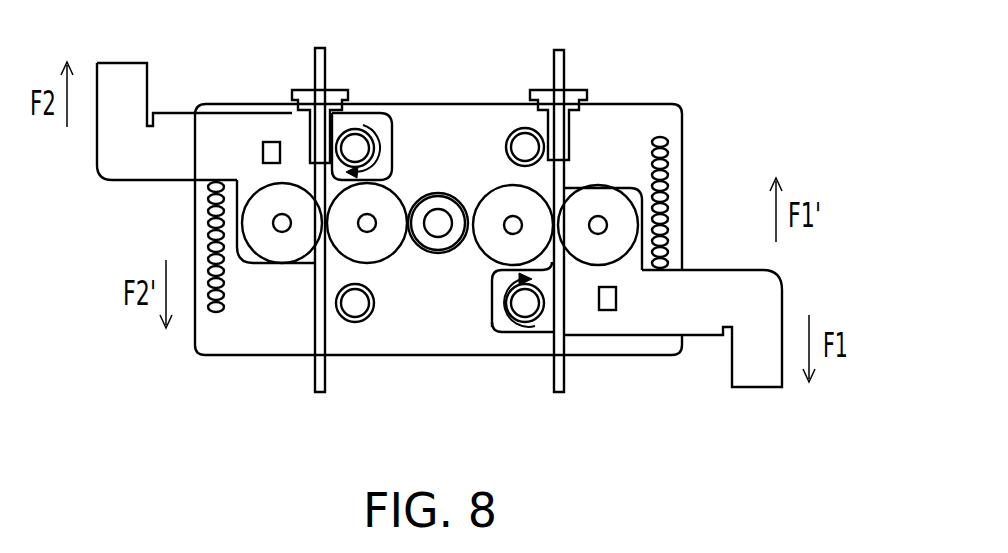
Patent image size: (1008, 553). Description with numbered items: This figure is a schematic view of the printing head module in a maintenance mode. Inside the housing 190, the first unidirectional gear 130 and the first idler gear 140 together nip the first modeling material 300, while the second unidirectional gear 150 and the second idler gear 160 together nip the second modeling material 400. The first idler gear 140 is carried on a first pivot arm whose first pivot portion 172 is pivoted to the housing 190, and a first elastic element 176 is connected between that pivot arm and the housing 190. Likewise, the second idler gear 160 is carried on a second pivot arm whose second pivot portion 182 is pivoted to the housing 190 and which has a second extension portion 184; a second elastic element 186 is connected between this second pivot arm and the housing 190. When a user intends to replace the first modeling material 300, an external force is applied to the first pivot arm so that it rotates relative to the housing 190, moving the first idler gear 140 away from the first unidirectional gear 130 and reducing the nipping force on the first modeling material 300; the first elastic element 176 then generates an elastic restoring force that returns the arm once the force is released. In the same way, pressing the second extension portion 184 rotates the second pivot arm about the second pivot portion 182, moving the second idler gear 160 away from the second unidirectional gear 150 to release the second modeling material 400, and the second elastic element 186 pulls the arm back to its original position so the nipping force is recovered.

The first unidirectional gear 130 is at (502, 200).
The first idler gear 140 is at (593, 197).
The second unidirectional gear 150 is at (385, 208).
The second idler gear 160 is at (270, 205).
The first pivot portion 172 is at (525, 310).
The first elastic element 176 is at (668, 167).
The second pivot portion 182 is at (356, 142).
The second extension portion 184 is at (122, 82).
The second elastic element 186 is at (212, 212).
The housing 190 is at (635, 127).
The first modeling material 300 is at (560, 373).
The second modeling material 400 is at (322, 373).